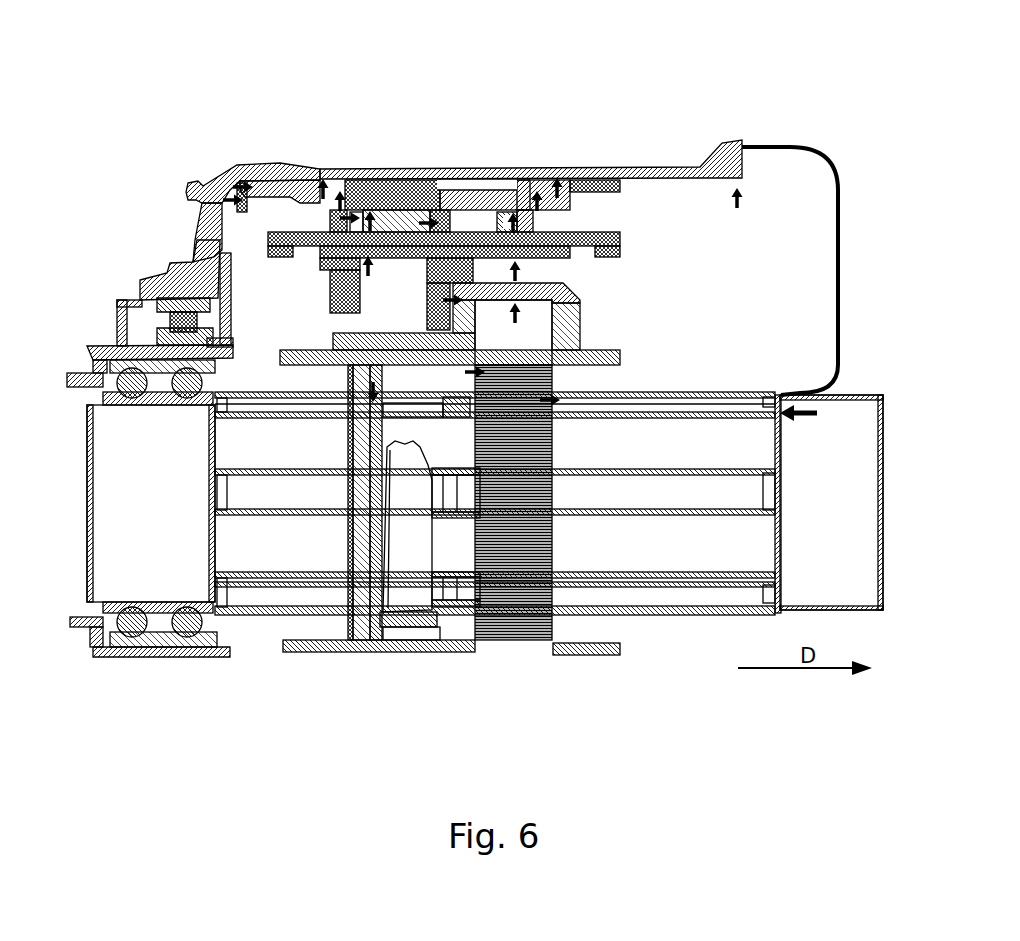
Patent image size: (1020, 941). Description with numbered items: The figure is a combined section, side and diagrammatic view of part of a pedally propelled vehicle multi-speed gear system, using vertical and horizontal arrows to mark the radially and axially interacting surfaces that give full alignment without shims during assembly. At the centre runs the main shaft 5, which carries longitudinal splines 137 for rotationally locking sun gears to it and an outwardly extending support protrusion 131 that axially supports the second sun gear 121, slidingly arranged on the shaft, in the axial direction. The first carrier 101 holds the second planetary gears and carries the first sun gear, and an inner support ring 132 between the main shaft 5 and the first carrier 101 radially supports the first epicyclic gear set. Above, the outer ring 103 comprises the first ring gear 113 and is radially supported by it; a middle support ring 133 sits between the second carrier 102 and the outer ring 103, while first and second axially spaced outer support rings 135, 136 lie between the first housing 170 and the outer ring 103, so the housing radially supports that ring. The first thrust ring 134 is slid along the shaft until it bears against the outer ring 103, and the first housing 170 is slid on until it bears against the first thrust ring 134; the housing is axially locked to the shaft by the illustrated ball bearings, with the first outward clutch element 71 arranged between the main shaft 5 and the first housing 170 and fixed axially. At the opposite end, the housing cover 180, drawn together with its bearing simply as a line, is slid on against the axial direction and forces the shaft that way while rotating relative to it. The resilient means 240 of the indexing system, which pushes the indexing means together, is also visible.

The main shaft 5 is at (733, 400).
The first outward clutch element 71 is at (147, 347).
The first carrier 101 is at (577, 293).
The second carrier 102 is at (590, 233).
The outer ring 103 is at (560, 182).
The first ring gear 113 is at (372, 190).
The second sun gear 121 is at (553, 380).
The support protrusion 131 is at (553, 640).
The inner support ring 132 is at (365, 642).
The middle support ring 133 is at (485, 190).
The first thrust ring 134 is at (237, 176).
The first outer support ring 135 is at (322, 172).
The second outer support ring 136 is at (537, 175).
The longitudinal splines 137 is at (725, 607).
The first housing 170 is at (188, 268).
The housing cover 180 is at (807, 146).
The resilient means 240 is at (448, 625).